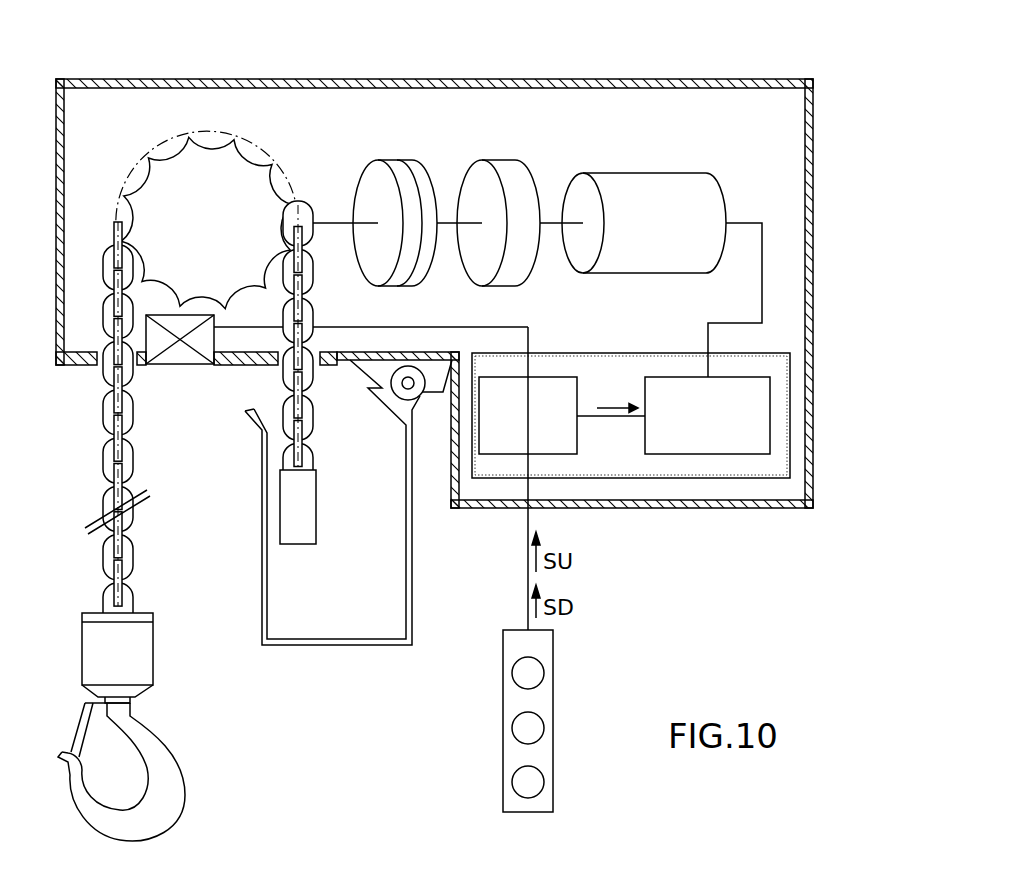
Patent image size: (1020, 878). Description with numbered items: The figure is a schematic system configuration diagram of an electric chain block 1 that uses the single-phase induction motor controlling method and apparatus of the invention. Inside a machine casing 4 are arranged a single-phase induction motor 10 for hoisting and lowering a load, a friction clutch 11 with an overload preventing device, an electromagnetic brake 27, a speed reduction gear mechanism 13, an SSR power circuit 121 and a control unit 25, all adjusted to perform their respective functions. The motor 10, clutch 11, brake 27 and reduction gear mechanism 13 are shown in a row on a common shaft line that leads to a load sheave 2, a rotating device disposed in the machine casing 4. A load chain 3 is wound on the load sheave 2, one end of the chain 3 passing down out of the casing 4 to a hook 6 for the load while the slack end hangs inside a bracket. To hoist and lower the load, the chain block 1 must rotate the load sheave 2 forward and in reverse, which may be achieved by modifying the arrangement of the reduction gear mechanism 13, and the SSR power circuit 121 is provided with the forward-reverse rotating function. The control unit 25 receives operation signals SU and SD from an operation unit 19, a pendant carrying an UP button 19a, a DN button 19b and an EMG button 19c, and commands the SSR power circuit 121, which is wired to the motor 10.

The electric chain block 1 is at (434, 254).
The load sheave 2 is at (213, 157).
The load chain 3 is at (101, 461).
The machine casing 4 is at (603, 79).
The hook 6 is at (175, 770).
The single-phase induction motor 10 is at (648, 184).
The friction clutch 11 is at (510, 166).
The speed reduction gear mechanism 13 is at (396, 166).
The electromagnetic brake 27 is at (430, 163).
The operation unit 19 is at (528, 721).
The UP button 19a is at (545, 728).
The DN button 19b is at (545, 782).
The EMG button 19c is at (545, 673).
The control unit 25 is at (558, 455).
The SSR power circuit 121 is at (770, 429).